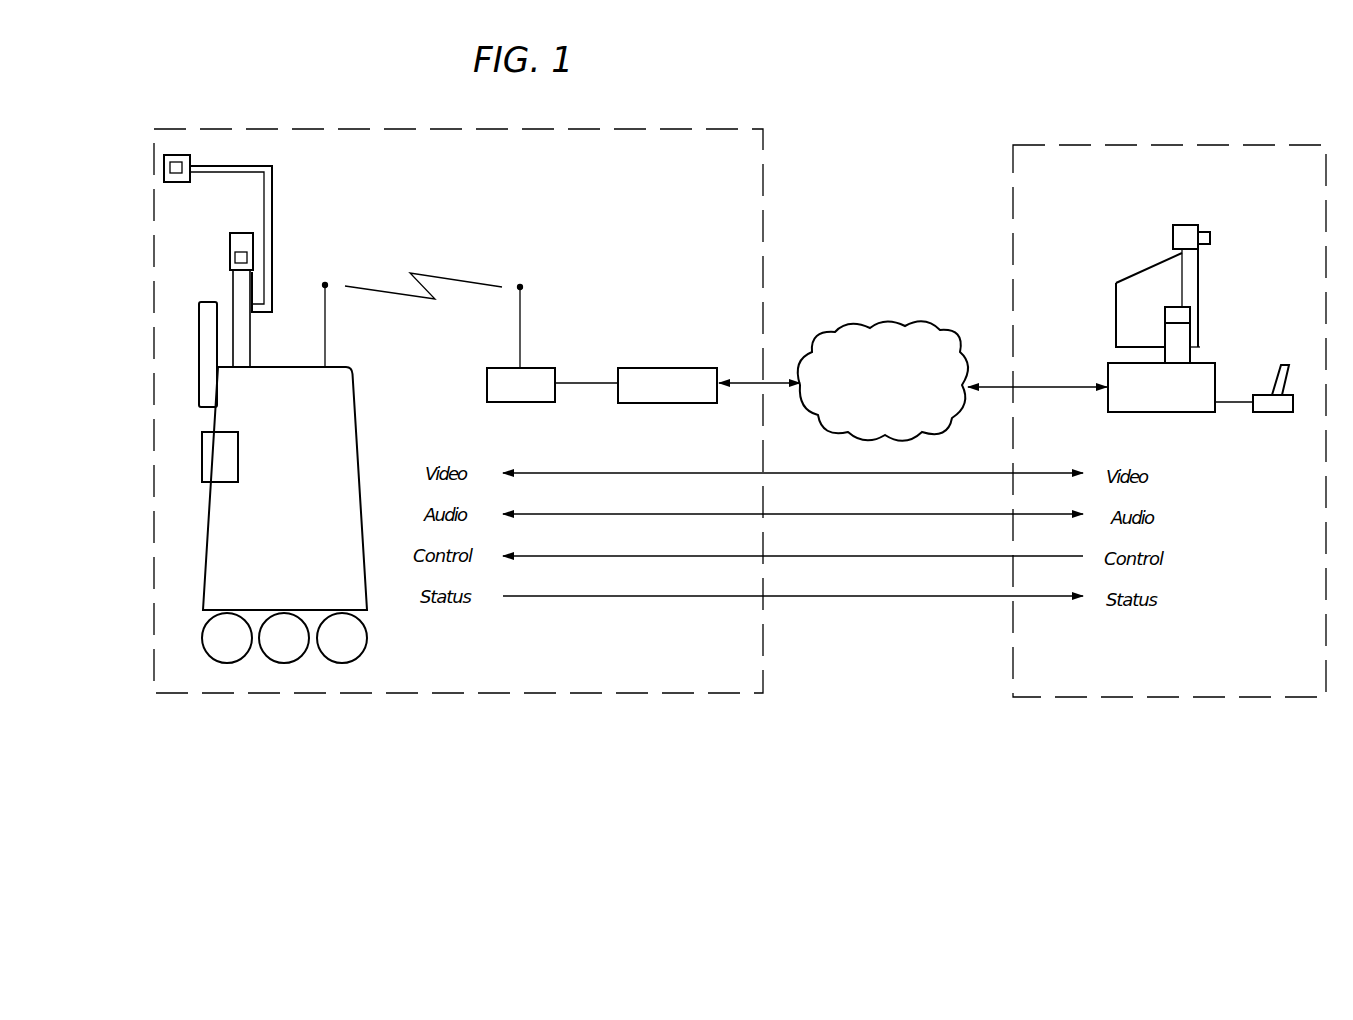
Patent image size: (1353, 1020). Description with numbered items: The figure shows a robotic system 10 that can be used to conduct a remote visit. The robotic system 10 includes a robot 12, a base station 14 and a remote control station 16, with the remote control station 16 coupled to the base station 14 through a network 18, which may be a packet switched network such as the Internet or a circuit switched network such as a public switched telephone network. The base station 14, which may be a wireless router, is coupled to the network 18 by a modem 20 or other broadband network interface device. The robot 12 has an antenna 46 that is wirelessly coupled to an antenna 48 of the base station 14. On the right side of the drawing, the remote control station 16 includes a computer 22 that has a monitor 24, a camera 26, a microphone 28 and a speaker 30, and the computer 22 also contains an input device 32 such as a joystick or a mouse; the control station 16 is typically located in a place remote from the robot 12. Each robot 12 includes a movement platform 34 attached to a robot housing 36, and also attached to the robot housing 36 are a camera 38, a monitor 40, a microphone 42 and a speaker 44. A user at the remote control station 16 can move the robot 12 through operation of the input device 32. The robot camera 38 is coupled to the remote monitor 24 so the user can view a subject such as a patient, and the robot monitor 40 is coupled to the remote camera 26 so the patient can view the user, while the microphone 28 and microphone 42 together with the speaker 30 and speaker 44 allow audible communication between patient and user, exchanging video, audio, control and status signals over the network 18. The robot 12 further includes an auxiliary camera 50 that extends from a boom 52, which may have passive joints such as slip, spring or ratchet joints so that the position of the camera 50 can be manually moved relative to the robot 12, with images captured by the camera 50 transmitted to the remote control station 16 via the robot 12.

The robotic system 10 is at (740, 413).
The robot 12 is at (334, 420).
The base station 14 is at (537, 368).
The remote control station 16 is at (1128, 300).
The network 18 is at (883, 380).
The modem 20 is at (665, 368).
The computer 22 is at (1148, 405).
The monitor 24 is at (1190, 276).
The camera 26 is at (1180, 236).
The microphone 28 is at (1174, 307).
The speaker 30 is at (1182, 356).
The input device 32 is at (1293, 403).
The movement platform 34 is at (346, 646).
The robot housing 36 is at (233, 580).
The camera 38 is at (235, 257).
The monitor 40 is at (208, 344).
The microphone 42 is at (243, 238).
The speaker 44 is at (214, 460).
The antenna 46 is at (325, 285).
The antenna 48 is at (520, 287).
The auxiliary camera 50 is at (175, 155).
The boom 52 is at (240, 168).